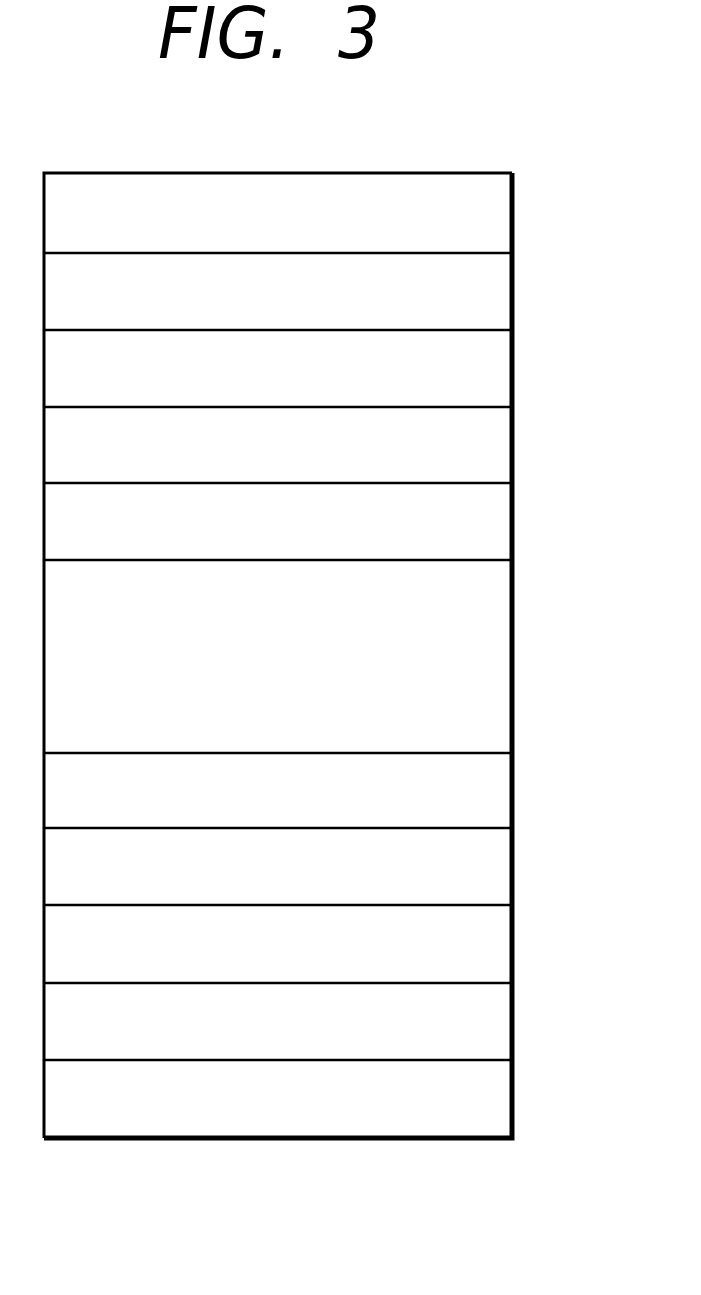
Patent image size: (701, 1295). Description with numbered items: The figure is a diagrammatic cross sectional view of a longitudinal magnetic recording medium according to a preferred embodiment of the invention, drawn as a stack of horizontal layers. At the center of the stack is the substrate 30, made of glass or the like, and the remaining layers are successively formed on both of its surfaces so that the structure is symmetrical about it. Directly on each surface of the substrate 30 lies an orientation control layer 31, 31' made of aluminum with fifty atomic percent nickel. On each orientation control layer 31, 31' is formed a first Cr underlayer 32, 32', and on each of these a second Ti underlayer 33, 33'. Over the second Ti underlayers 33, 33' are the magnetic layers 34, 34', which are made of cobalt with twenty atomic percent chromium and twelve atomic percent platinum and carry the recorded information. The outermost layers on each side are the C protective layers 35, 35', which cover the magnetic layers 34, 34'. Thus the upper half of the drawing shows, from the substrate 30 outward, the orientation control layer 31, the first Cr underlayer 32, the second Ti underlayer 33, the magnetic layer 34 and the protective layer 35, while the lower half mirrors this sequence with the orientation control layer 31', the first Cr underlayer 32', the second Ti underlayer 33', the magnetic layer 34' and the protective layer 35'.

The substrate 30 is at (498, 662).
The orientation control layer 31 is at (323, 521).
The first Cr underlayer 32 is at (323, 445).
The second Ti underlayer 33 is at (323, 368).
The magnetic layer 34 is at (323, 291).
The protective layer 35 is at (323, 213).
The orientation control layer 31' is at (328, 790).
The first Cr underlayer 32' is at (328, 866).
The second Ti underlayer 33' is at (328, 944).
The magnetic layer 34' is at (328, 1021).
The protective layer 35' is at (328, 1099).